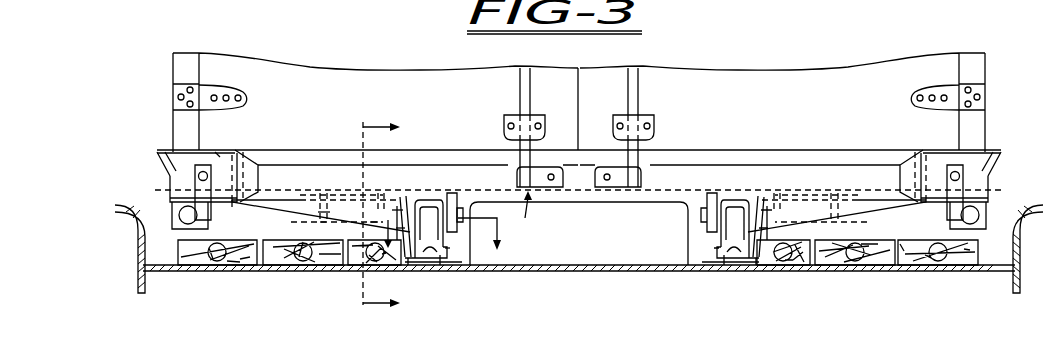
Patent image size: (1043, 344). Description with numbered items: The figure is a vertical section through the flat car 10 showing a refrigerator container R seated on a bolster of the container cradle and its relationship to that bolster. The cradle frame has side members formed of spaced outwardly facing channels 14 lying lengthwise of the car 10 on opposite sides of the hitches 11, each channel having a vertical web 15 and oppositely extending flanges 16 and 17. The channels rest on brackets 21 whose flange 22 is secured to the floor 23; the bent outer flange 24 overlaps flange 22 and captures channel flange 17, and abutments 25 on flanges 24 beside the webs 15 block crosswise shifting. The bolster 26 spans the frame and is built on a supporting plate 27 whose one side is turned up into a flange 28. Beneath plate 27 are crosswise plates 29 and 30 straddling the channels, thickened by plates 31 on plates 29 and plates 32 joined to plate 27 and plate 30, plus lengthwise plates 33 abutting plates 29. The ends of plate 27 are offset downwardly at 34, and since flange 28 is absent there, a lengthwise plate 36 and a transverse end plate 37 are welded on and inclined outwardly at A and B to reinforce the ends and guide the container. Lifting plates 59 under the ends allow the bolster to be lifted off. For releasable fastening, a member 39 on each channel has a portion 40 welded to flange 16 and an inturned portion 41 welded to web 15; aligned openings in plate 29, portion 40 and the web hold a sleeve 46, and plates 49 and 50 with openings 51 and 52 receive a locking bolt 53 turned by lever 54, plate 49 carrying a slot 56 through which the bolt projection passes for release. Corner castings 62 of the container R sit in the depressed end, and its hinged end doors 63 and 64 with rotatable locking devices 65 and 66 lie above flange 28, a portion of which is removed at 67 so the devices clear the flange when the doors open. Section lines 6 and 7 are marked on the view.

The refrigerator container R is at (178, 68).
The outwardly inclined upper portion of plate 36 A is at (948, 150).
The outwardly inclined upper portion of plate 37 B is at (1000, 163).
The section line 6- 6 is at (390, 214).
The section line 7- 7 is at (435, 242).
The car 10 is at (126, 198).
The hitches 11 is at (604, 205).
The channels 14 is at (720, 240).
The web 15 is at (718, 233).
The channel flange 16 is at (742, 205).
The channel flange 17 is at (736, 262).
The brackets 21 is at (720, 268).
The bracket flange 22 is at (428, 262).
The floor 23 is at (834, 272).
The overlapping flange 24 is at (577, 245).
The abutments 25 is at (725, 252).
The bolsters 26 is at (521, 213).
The supporting plate 27 is at (566, 195).
The flange 28 is at (793, 172).
The reinforcing plates 29 is at (758, 205).
The reinforcing plates 30 is at (726, 210).
The plates 31 is at (770, 233).
The plates 32 is at (744, 206).
The reinforcing plates 33 is at (893, 208).
The downwardly offset end 34 is at (925, 208).
The plate 36 is at (912, 165).
The plate 37 is at (990, 183).
The member 39 is at (403, 210).
The portion 40 is at (386, 226).
The portion 41 is at (452, 241).
The sleeve 46 is at (392, 213).
The plate 49 is at (790, 225).
The plate 50 is at (840, 222).
The opening 51 is at (372, 206).
The opening 52 is at (846, 205).
The locking bolt 53 is at (796, 213).
The lever 54 is at (318, 214).
The slot 56 is at (380, 212).
The lifting plates 59 is at (978, 228).
The castings 62 is at (990, 150).
The hinged end door 63 is at (366, 106).
The hinged end door 64 is at (785, 106).
The locking device 65 is at (523, 97).
The locking device 66 is at (639, 97).
The removed portion of flange 67 is at (570, 183).